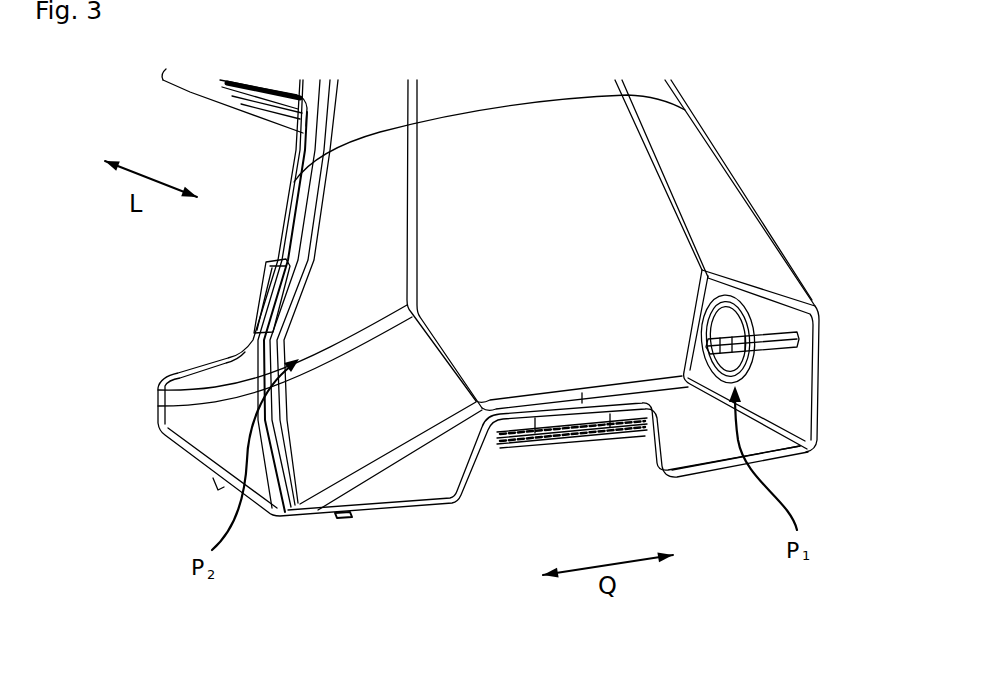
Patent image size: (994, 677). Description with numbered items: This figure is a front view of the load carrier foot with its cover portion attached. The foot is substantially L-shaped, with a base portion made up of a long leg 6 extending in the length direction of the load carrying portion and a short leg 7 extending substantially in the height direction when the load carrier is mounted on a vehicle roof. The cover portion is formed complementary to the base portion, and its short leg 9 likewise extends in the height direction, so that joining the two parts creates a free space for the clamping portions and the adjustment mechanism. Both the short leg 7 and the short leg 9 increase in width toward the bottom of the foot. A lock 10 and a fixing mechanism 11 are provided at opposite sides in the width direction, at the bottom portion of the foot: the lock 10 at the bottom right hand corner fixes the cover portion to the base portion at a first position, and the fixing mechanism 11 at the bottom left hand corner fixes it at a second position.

The long leg of the base portion 6 is at (223, 98).
The short leg of the base portion 7 is at (222, 435).
The short leg of the cover portion 9 is at (632, 252).
The lock 10 is at (724, 328).
The fixing mechanism 11 is at (319, 368).